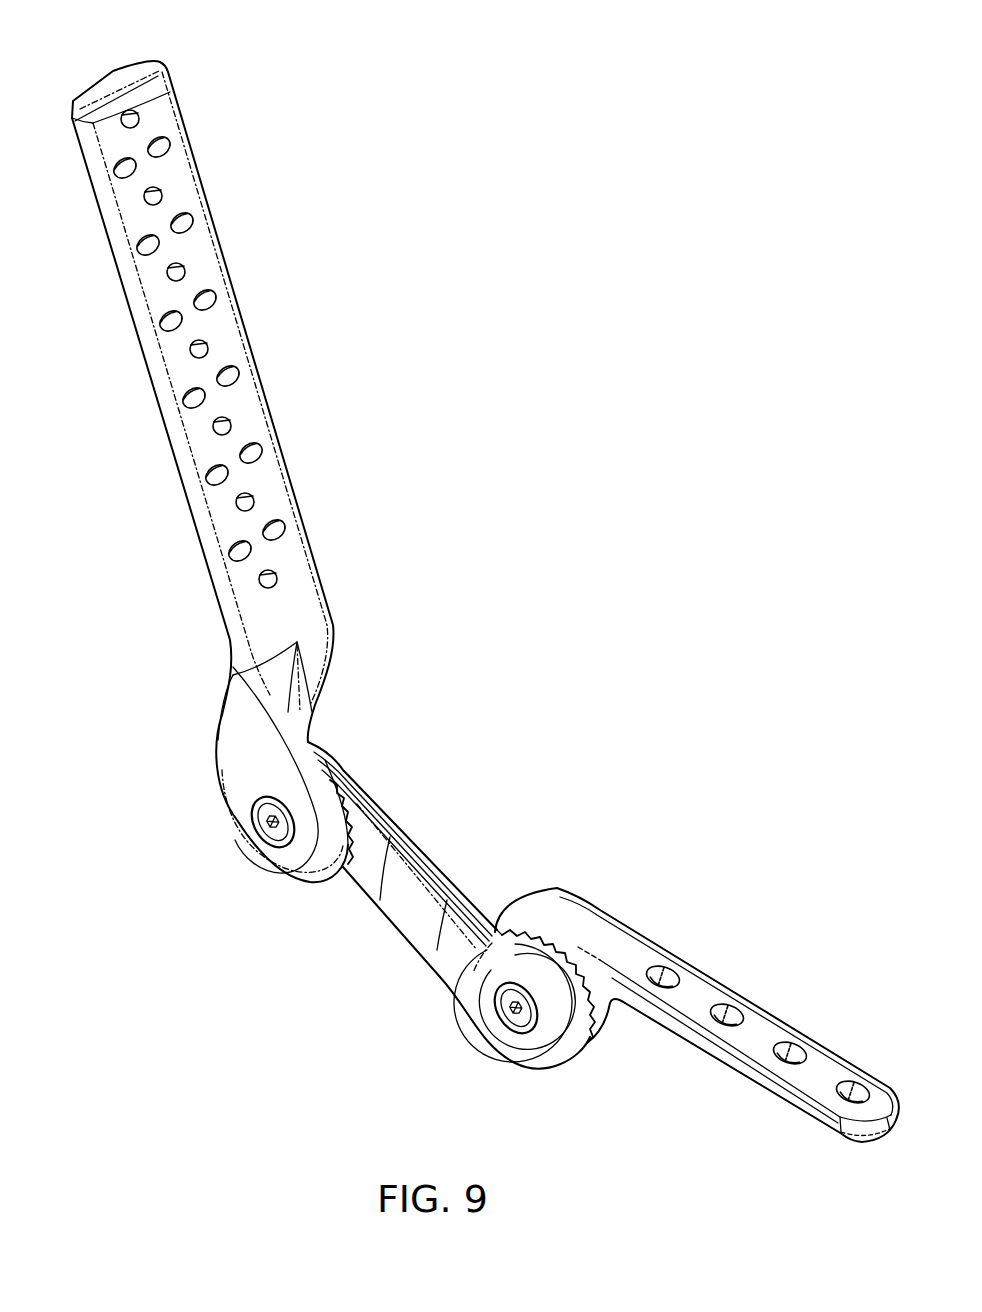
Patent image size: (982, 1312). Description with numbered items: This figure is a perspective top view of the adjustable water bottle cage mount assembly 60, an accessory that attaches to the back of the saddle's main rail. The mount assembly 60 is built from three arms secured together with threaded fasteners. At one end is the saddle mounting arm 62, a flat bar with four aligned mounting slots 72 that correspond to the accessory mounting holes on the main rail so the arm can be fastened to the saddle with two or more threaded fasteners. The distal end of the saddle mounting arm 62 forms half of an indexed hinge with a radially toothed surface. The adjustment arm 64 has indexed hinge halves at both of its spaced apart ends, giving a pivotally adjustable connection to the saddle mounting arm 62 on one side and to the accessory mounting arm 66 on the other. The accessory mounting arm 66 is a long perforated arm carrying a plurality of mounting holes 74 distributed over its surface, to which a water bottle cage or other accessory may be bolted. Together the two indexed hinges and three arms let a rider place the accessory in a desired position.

The adjustable water bottle cage mount assembly 60 is at (546, 62).
The saddle mounting arm 62 is at (738, 998).
The adjustment arm 64 is at (410, 900).
The accessory mounting arm 66 is at (242, 405).
The mounting slots 72 is at (670, 977).
The mounting holes 74 is at (140, 117).